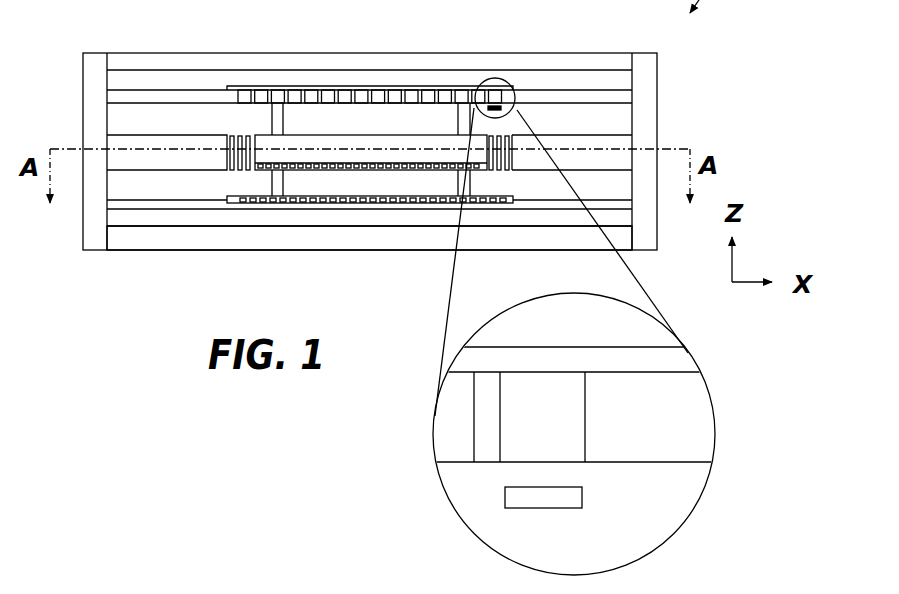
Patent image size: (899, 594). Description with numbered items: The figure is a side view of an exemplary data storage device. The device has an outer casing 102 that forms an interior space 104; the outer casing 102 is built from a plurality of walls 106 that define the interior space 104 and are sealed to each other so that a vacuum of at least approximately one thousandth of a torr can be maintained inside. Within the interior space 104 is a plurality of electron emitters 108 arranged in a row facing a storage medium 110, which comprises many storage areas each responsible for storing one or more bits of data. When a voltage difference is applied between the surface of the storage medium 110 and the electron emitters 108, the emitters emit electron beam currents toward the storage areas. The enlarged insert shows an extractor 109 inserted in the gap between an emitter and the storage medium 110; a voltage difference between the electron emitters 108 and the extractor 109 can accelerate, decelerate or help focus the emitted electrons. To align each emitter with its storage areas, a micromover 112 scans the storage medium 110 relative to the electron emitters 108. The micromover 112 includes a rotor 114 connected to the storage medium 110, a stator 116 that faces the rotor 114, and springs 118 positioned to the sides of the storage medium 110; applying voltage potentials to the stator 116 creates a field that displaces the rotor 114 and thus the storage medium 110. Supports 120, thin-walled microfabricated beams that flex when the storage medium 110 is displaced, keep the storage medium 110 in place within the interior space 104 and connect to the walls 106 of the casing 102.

The outer casing 102 is at (684, 99).
The interior space 104 is at (142, 110).
The walls 106 is at (533, 60).
The electron emitters 108 is at (278, 95).
The extractor 109 is at (578, 497).
The storage medium 110 is at (398, 135).
The micromover 112 is at (216, 221).
The rotor 114 is at (340, 170).
The stator 116 is at (317, 207).
The springs 118 is at (231, 127).
The supports 120 is at (284, 114).